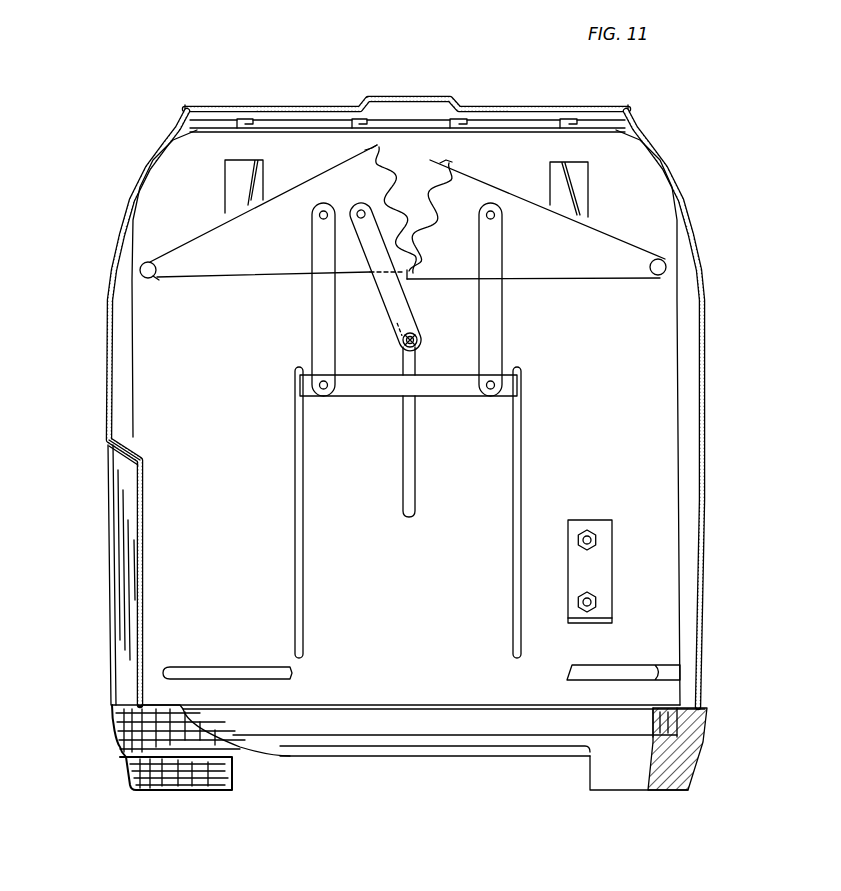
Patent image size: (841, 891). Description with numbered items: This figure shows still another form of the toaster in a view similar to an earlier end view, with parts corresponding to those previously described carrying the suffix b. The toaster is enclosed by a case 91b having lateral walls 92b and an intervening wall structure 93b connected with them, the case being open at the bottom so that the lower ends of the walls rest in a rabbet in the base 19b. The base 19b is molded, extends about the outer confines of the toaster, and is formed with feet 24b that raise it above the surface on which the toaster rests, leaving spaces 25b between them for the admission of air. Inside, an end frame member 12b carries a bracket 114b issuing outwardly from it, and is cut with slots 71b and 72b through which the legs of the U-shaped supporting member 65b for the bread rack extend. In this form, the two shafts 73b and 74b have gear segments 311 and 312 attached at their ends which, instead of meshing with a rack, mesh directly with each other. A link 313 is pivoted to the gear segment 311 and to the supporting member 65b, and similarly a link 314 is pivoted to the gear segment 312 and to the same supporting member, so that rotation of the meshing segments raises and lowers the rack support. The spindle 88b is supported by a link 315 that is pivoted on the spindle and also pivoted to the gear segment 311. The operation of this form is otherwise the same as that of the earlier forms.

The intervening wall structure 93b is at (325, 106).
The lateral wall 92b is at (112, 393).
The end frame member 12b is at (663, 488).
The case 91b is at (120, 641).
The shaft 73b is at (151, 280).
The shaft 74b is at (660, 278).
The gear segment 311 is at (258, 272).
The gear segment 312 is at (575, 270).
The link 313 is at (317, 348).
The link 314 is at (493, 348).
The link 315 is at (393, 303).
The spindle 88b is at (420, 334).
The supporting member 65b is at (360, 397).
The slot 71b is at (297, 500).
The slot 72b is at (517, 460).
The bracket 114b is at (605, 608).
The space 25b is at (353, 773).
The foot 24b is at (162, 787).
The base 19b is at (688, 775).